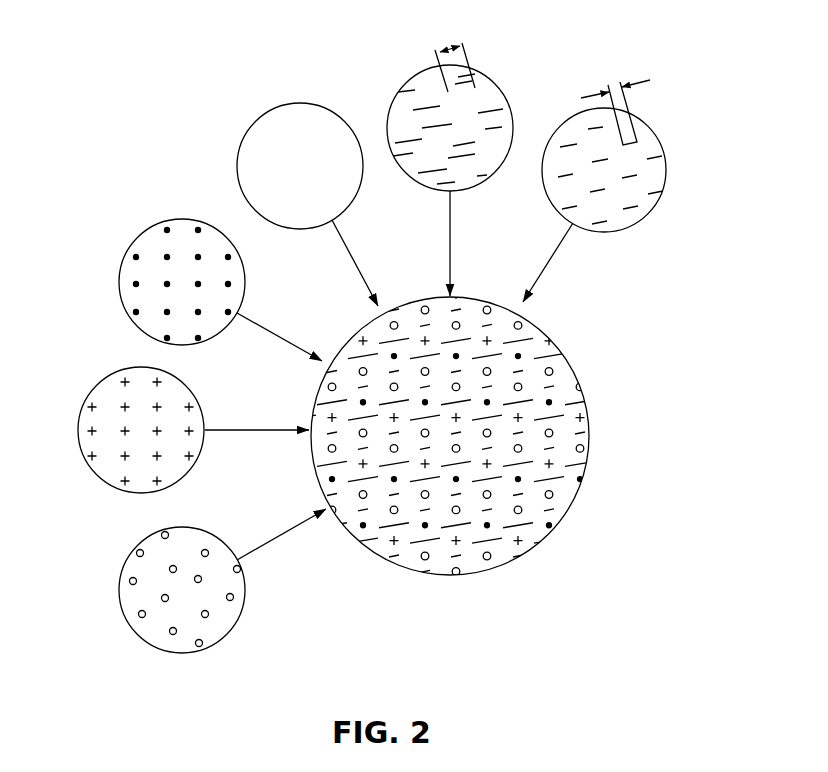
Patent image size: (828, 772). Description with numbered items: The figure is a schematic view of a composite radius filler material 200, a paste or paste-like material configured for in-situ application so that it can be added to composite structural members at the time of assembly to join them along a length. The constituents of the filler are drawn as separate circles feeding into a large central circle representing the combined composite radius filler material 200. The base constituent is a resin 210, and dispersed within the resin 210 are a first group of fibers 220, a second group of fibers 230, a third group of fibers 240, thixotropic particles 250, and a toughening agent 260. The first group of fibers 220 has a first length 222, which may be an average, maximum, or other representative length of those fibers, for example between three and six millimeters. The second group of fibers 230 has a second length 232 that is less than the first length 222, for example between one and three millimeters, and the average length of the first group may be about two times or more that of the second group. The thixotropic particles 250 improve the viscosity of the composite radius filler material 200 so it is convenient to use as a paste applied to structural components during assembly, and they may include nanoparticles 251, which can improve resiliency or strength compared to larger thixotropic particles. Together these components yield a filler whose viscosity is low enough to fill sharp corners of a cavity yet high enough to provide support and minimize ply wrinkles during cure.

The composite radius filler material 200 is at (452, 574).
The resin 210 is at (262, 115).
The first group of fibers 220 is at (407, 80).
The first length 222 is at (449, 48).
The second group of fibers 230 is at (648, 216).
The second length 232 is at (647, 80).
The third group of fibers 240 is at (140, 235).
The thixotropic particles 250 is at (99, 383).
The nanoparticles 251 is at (125, 438).
The toughening agent 260 is at (133, 553).